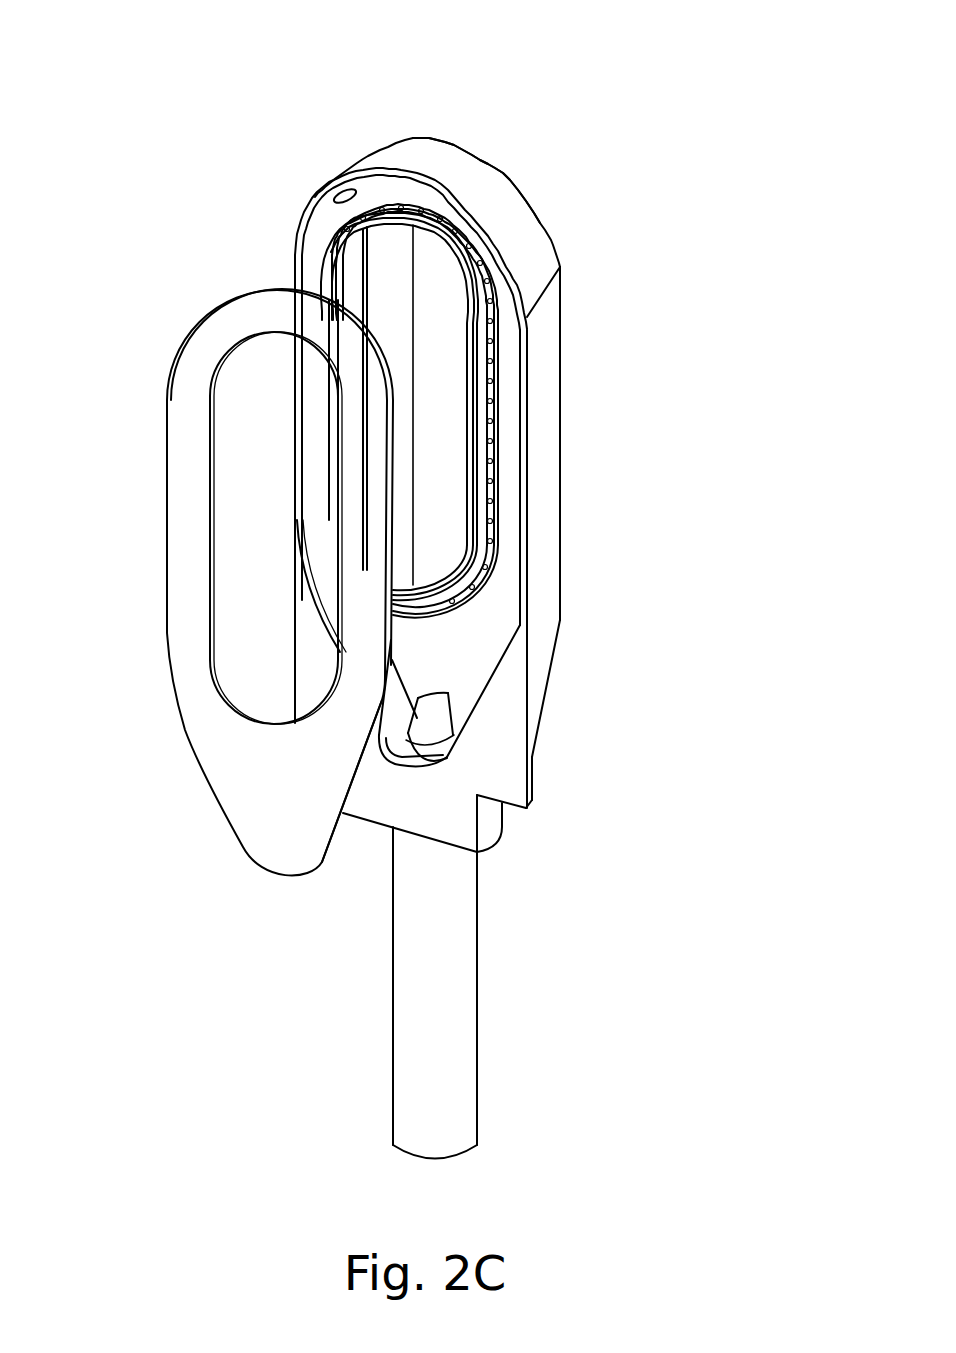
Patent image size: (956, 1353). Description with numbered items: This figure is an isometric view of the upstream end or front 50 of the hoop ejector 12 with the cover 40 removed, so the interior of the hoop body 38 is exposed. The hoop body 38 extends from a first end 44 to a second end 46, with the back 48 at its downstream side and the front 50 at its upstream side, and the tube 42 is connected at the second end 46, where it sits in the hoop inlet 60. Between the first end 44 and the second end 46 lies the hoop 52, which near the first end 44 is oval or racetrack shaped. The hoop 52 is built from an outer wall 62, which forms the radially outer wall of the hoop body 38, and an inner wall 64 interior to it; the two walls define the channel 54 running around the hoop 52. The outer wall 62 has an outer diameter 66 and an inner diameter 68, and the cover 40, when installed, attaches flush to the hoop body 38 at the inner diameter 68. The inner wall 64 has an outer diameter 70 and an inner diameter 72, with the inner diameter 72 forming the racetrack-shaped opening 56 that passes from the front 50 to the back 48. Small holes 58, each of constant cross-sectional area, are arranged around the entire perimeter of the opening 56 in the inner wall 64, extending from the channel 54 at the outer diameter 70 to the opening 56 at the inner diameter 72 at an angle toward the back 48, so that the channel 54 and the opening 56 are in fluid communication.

The hoop ejector 12 is at (106, 101).
The hoop body 38 is at (595, 449).
The cover 40 is at (267, 783).
The tube 42 is at (417, 1018).
The first end 44 is at (428, 148).
The second end 46 is at (369, 825).
The back 48 is at (413, 367).
The front 50 is at (493, 768).
The hoop 52 is at (535, 252).
The channel 54 is at (340, 217).
The opening 56 is at (437, 483).
The holes 58 is at (493, 345).
The hoop inlet 60 is at (440, 717).
The outer wall 62 is at (500, 197).
The inner wall 64 is at (353, 280).
The outer diameter 66 is at (470, 173).
The inner diameter 68 is at (323, 200).
The outer diameter 70 is at (403, 207).
The inner diameter 72 is at (350, 317).